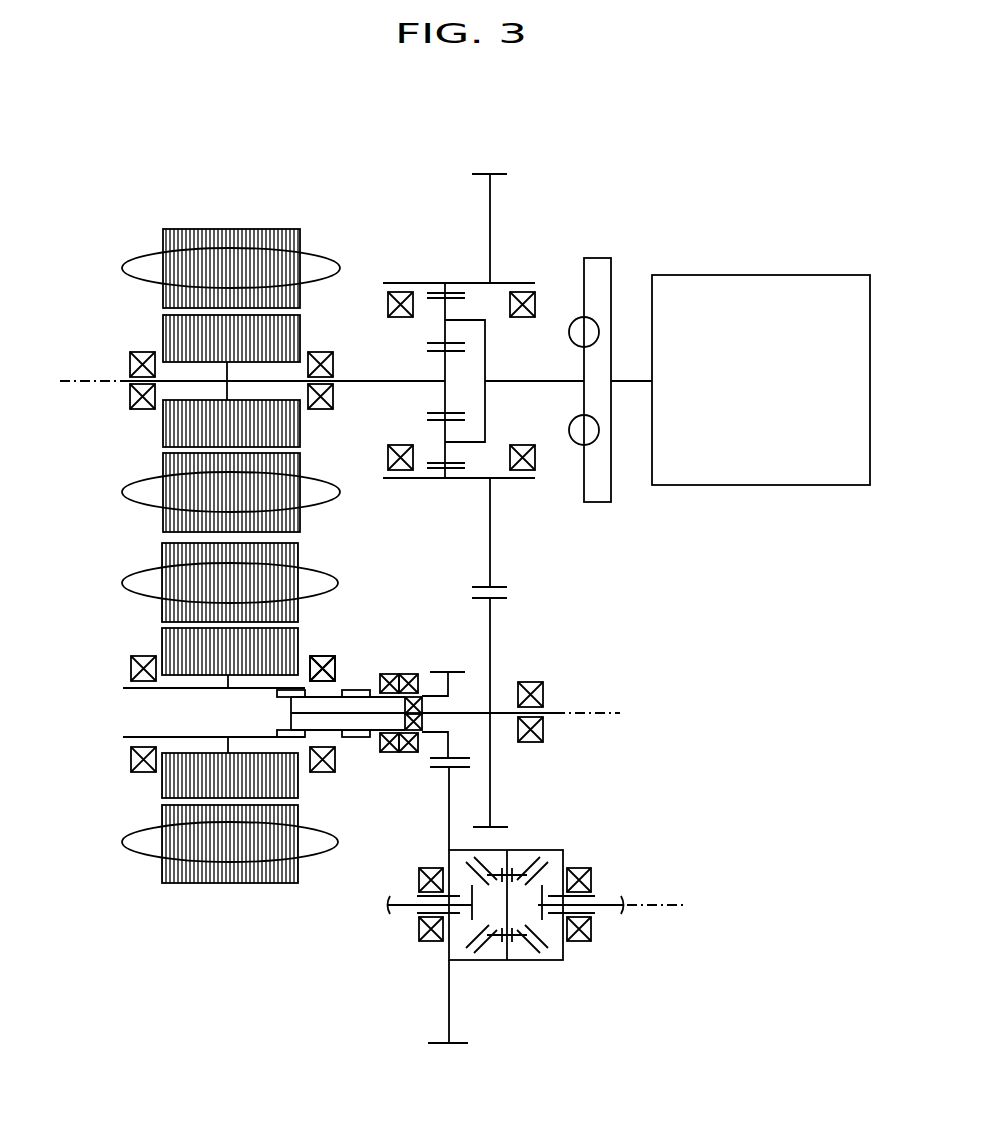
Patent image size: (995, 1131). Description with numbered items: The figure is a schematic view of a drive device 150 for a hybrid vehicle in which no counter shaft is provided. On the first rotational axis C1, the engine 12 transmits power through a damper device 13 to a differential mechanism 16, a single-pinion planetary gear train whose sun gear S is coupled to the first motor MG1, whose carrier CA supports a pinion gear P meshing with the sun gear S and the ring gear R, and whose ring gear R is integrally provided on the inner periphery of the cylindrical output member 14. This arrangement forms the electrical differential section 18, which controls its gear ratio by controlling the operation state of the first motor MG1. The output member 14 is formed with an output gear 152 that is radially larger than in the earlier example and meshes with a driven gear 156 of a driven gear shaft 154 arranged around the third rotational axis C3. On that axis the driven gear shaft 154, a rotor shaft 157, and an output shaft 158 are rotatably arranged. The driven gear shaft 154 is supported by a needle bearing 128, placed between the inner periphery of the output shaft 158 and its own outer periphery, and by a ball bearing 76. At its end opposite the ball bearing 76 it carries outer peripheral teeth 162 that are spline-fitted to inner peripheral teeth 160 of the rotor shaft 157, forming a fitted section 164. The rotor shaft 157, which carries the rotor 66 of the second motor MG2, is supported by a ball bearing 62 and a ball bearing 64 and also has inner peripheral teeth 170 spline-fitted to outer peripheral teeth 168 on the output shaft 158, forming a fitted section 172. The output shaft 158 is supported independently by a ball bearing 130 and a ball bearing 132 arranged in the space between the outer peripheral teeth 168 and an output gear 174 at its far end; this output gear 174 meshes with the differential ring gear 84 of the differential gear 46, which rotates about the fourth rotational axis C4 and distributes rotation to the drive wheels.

The drive device 150 is at (645, 187).
The engine 12 is at (740, 287).
The damper device 13 is at (612, 275).
The output member 14 is at (522, 283).
The differential mechanism 16 is at (428, 267).
The electrical differential section 18 is at (345, 235).
The differential gear 46 is at (440, 957).
The ball bearing 62 is at (142, 772).
The ball bearing 64 is at (320, 657).
The rotor 66 is at (168, 782).
The ball bearing 76 is at (540, 693).
The differential ring gear 84 is at (457, 1043).
The needle bearing 128 is at (424, 707).
The ball bearing 130 is at (388, 753).
The ball bearing 132 is at (403, 753).
The output gear 152 is at (490, 520).
The driven gear shaft 154 is at (455, 717).
The driven gear 156 is at (490, 635).
The rotor shaft 157 is at (188, 688).
The output shaft 158 is at (422, 735).
The inner peripheral teeth 160 is at (282, 692).
The outer peripheral teeth 162 is at (291, 710).
The fitted section 164 is at (268, 730).
The outer peripheral teeth 168 is at (353, 687).
The inner peripheral teeth 170 is at (356, 693).
The fitted section 172 is at (353, 745).
The output gear 174 is at (455, 670).
The first motor MG1 is at (237, 228).
The second motor MG2 is at (135, 628).
The first rotational axis C1 is at (98, 382).
The third rotational axis C3 is at (580, 712).
The fourth rotational axis C4 is at (653, 905).
The carrier CA is at (453, 320).
The sun gear S is at (427, 343).
The pinion gear P is at (427, 412).
The ring gear R is at (457, 470).